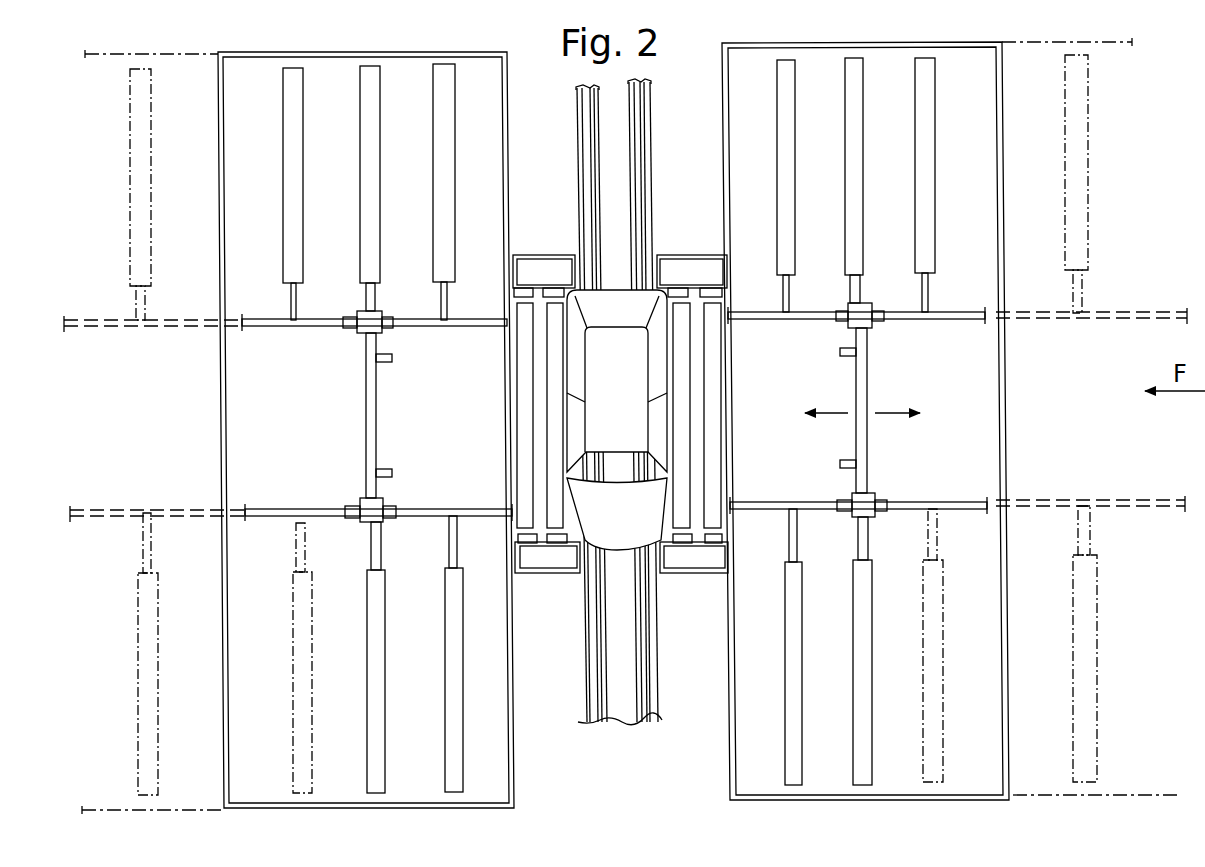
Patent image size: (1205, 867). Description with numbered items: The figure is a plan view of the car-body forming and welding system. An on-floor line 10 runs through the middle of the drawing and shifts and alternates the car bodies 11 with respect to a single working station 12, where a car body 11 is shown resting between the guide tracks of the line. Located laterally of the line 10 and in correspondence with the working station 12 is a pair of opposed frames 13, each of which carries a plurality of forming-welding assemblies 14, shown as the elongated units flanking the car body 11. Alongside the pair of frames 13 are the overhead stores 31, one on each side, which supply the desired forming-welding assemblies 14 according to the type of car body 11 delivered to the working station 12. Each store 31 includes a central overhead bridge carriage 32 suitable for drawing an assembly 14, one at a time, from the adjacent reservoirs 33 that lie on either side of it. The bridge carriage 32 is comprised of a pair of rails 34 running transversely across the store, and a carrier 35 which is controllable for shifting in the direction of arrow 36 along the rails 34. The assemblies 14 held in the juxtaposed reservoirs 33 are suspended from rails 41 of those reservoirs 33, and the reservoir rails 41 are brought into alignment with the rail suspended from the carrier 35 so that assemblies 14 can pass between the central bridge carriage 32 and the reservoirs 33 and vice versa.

The on-floor line 10 is at (538, 267).
The car body 11 is at (611, 337).
The working station 12 is at (678, 104).
The frame 13 is at (669, 252).
The forming-welding assembly 14 is at (361, 181).
The overhead store 31 is at (217, 370).
The central overhead bridge carriage 32 is at (252, 425).
The reservoir 33 is at (332, 77).
The rail 34 is at (265, 318).
The carrier 35 is at (358, 372).
The arrow 36 is at (902, 407).
The rail of reservoir 41 is at (442, 303).